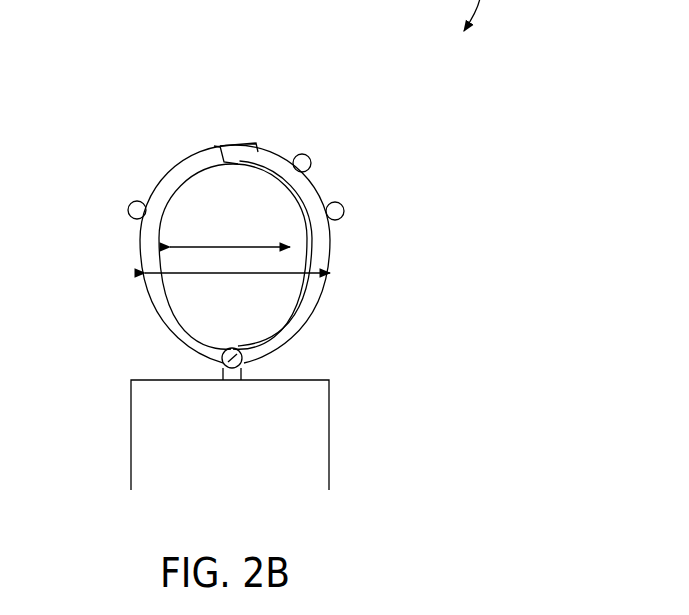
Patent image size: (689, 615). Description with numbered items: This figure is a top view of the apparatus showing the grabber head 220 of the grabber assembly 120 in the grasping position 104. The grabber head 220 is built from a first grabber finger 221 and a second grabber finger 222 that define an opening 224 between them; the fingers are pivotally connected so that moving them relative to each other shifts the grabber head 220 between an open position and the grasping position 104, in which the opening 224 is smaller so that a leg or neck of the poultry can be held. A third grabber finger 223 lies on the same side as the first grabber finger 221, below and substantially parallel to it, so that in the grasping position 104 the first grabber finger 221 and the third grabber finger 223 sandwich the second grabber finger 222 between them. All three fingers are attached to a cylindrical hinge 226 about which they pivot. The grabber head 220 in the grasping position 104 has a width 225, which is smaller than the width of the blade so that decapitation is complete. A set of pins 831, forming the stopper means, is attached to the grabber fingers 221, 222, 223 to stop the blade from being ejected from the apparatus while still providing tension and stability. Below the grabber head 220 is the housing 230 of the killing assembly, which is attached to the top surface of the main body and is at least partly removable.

The grasping position 104 is at (501, 56).
The grabber assembly 120 is at (299, 114).
The grabber head 220 is at (232, 235).
The first grabber finger 221 is at (329, 247).
The second grabber finger 222 is at (178, 175).
The third grabber finger 223 is at (298, 207).
The opening 224 is at (217, 245).
The width of the grabber head 225 is at (188, 273).
The cylindrical hinge 226 is at (222, 363).
The housing 230 is at (147, 414).
The set of pins 831 is at (133, 208).